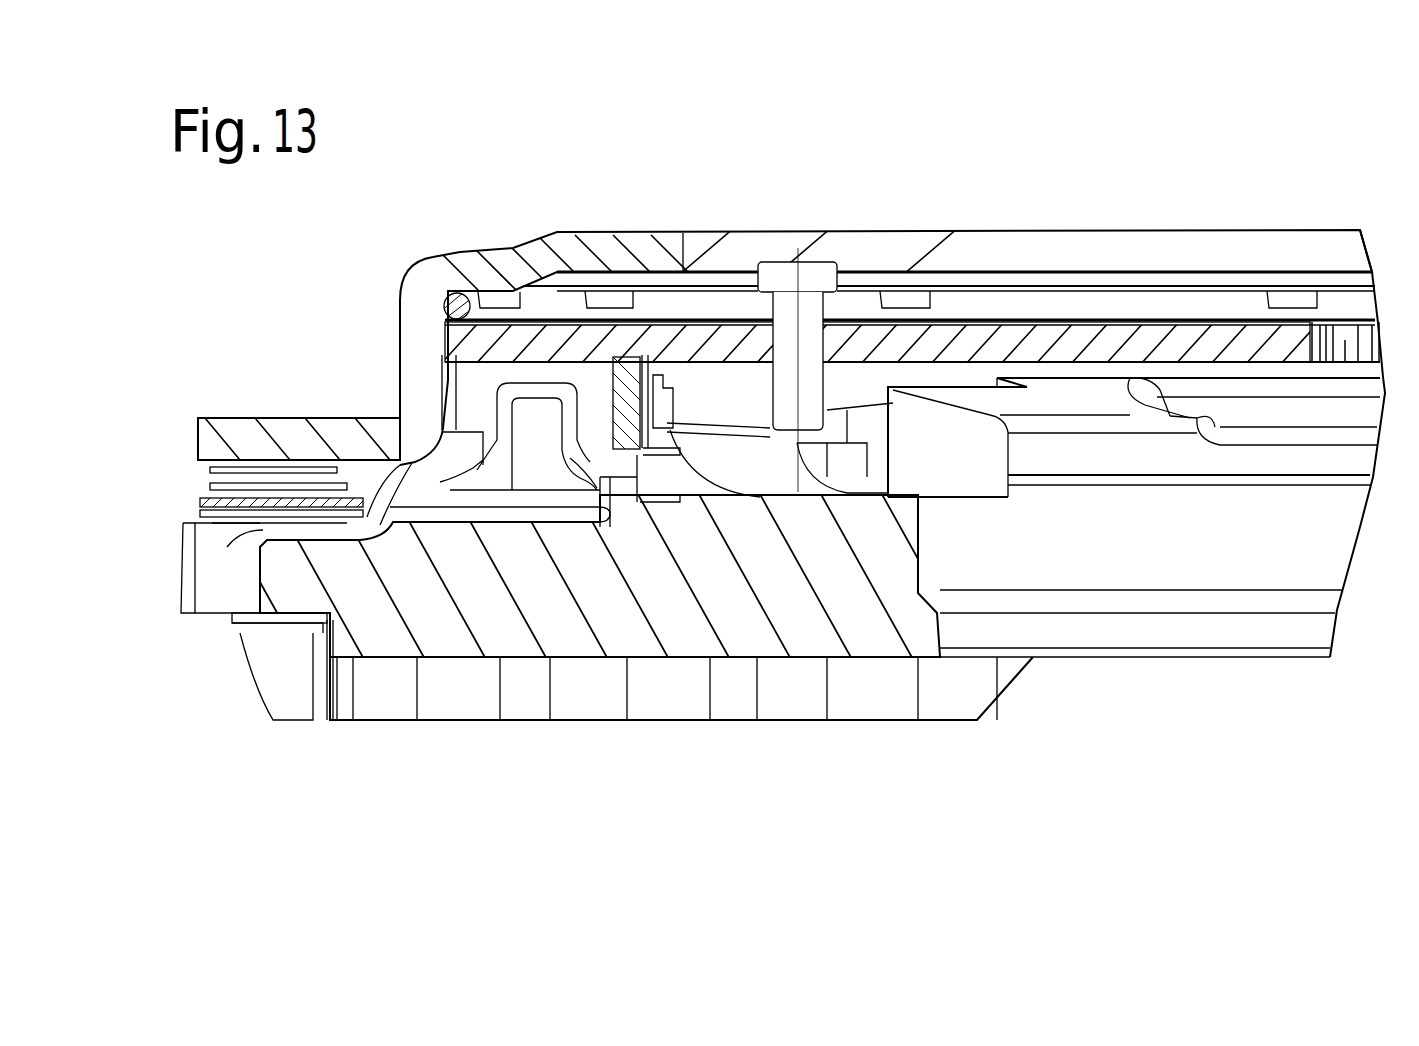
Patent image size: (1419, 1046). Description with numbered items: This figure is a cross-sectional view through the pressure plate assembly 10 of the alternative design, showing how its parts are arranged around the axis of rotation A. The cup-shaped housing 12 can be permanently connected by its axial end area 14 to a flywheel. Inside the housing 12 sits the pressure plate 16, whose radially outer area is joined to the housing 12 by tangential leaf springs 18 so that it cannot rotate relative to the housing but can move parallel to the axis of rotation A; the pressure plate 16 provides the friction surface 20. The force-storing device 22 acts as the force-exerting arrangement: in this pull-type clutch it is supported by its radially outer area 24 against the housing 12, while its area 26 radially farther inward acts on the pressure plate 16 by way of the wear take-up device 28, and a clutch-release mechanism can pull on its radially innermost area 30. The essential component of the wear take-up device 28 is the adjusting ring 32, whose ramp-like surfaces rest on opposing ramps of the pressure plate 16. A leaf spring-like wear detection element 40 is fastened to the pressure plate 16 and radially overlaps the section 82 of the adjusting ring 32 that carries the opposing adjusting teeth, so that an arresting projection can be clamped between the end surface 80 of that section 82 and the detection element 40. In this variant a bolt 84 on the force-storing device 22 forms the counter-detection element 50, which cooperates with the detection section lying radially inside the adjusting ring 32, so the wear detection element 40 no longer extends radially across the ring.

The pressure plate assembly 10 is at (1107, 160).
The housing 12 is at (605, 233).
The axial end area 14 is at (260, 676).
The pressure plate 16 is at (565, 648).
The tangential leaf springs 18 is at (198, 503).
The friction surface 20 is at (730, 620).
The force-storing device 22 is at (987, 320).
The radially outer area 24 is at (457, 333).
The area radially farther inward 26 is at (657, 333).
The wear take-up device 28 is at (840, 360).
The radially innermost area 30 is at (1270, 350).
The adjusting ring 32 is at (612, 390).
The wear detection element 40 is at (797, 490).
The counter-detection element 50 is at (835, 379).
The end surface 80 is at (627, 477).
The section 82 is at (640, 380).
The bolt 84 is at (748, 385).
The axis of rotation A is at (1418, 218).